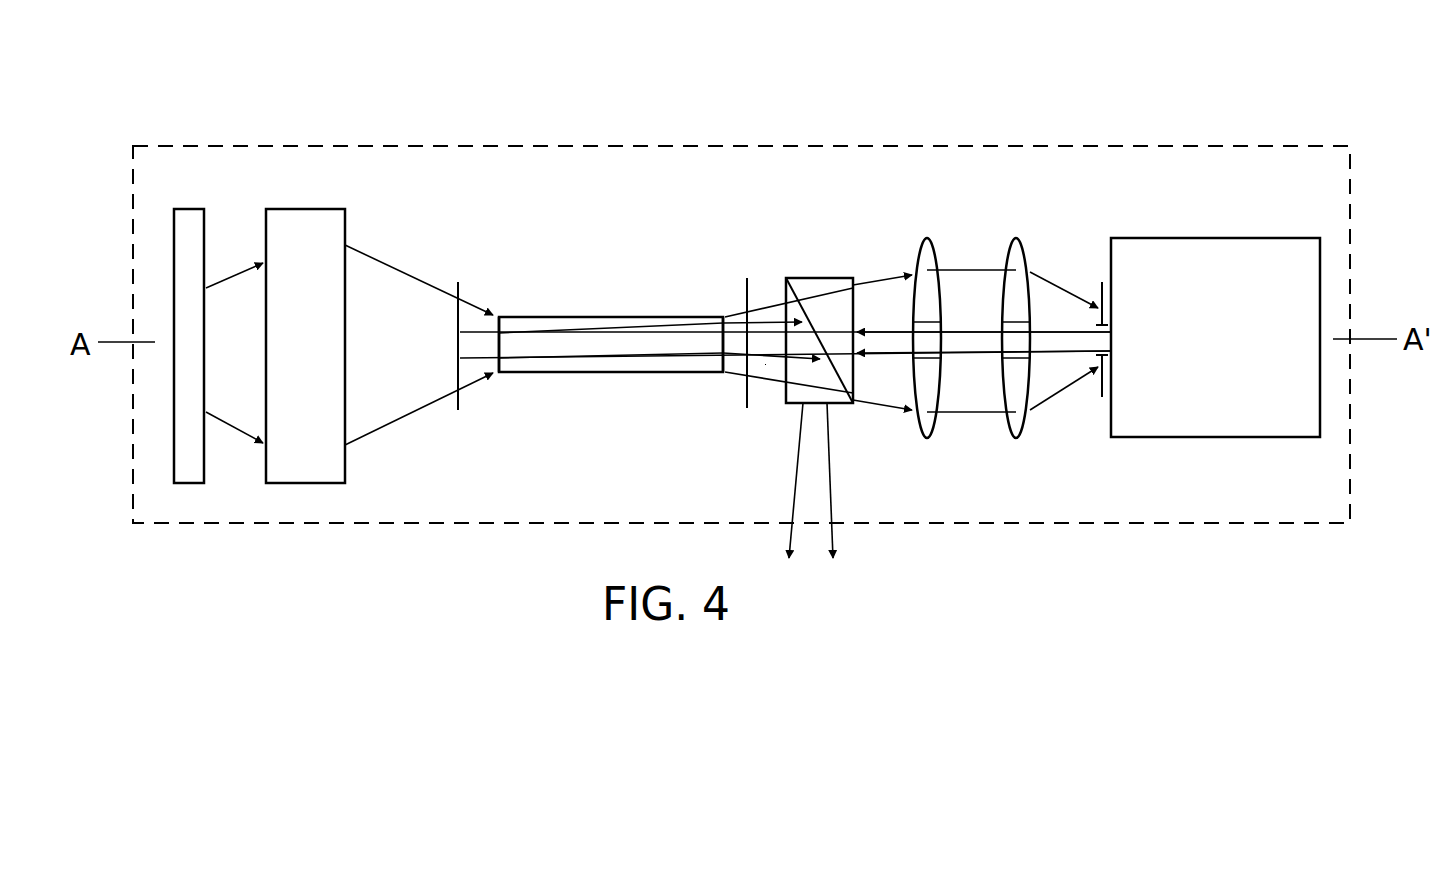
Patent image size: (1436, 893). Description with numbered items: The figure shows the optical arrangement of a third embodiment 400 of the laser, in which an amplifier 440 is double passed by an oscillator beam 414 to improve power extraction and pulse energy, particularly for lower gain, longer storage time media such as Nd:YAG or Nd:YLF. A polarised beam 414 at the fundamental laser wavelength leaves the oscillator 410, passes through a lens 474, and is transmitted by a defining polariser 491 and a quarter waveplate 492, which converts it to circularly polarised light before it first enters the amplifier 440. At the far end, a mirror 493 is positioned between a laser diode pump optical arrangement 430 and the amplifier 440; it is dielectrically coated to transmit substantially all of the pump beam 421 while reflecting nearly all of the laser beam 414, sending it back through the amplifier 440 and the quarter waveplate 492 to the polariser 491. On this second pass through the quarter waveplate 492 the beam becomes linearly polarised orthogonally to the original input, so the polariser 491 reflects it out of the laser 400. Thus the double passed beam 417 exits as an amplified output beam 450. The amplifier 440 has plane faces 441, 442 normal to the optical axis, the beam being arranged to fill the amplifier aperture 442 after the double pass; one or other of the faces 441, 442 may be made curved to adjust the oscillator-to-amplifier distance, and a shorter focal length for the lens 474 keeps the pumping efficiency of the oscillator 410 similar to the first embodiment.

The third embodiment 400 is at (535, 145).
The oscillator 410 is at (1192, 278).
The oscillator beam 414 is at (967, 348).
The double passed beam 417 is at (765, 365).
The pump beam 421 is at (397, 422).
The laser diode pump optical arrangement 430 is at (309, 245).
The amplifier 440 is at (592, 316).
The amplifier face 441 is at (498, 348).
The amplifier aperture 442 is at (723, 343).
The amplified output beam 450 is at (817, 528).
The lens 474 is at (1012, 420).
The polariser 491 is at (813, 283).
The quarter waveplate 492 is at (747, 288).
The mirror 493 is at (460, 295).